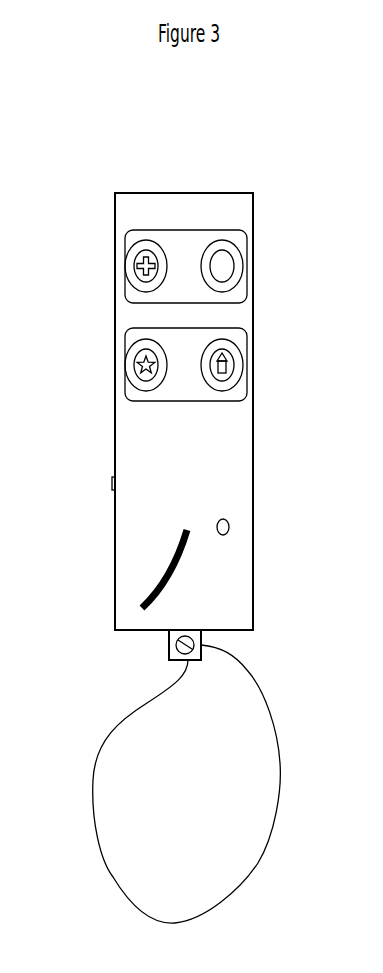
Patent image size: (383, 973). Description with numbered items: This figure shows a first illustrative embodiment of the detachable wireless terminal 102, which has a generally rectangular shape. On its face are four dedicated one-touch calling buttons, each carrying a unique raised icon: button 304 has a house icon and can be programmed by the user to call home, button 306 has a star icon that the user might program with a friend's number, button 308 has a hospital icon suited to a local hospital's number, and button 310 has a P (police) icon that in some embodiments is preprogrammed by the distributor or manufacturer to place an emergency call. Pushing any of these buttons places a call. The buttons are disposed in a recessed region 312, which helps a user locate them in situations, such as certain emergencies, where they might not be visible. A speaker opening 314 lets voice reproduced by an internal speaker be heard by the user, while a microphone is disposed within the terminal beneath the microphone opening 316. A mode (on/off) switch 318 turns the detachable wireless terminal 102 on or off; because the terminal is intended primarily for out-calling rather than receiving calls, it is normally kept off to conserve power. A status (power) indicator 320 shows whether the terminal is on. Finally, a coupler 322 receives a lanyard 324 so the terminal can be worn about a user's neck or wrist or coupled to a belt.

The detachable wireless terminal 102 is at (74, 132).
The button 304 is at (237, 357).
The button 306 is at (128, 360).
The button 308 is at (133, 265).
The button 310 is at (237, 262).
The recessed region 312 is at (175, 242).
The speaker opening 314 is at (137, 578).
The microphone opening 316 is at (228, 192).
The mode (on/off) switch 318 is at (110, 470).
The status (power) indicator 320 is at (230, 537).
The coupler 322 is at (168, 652).
The lanyard 324 is at (271, 684).